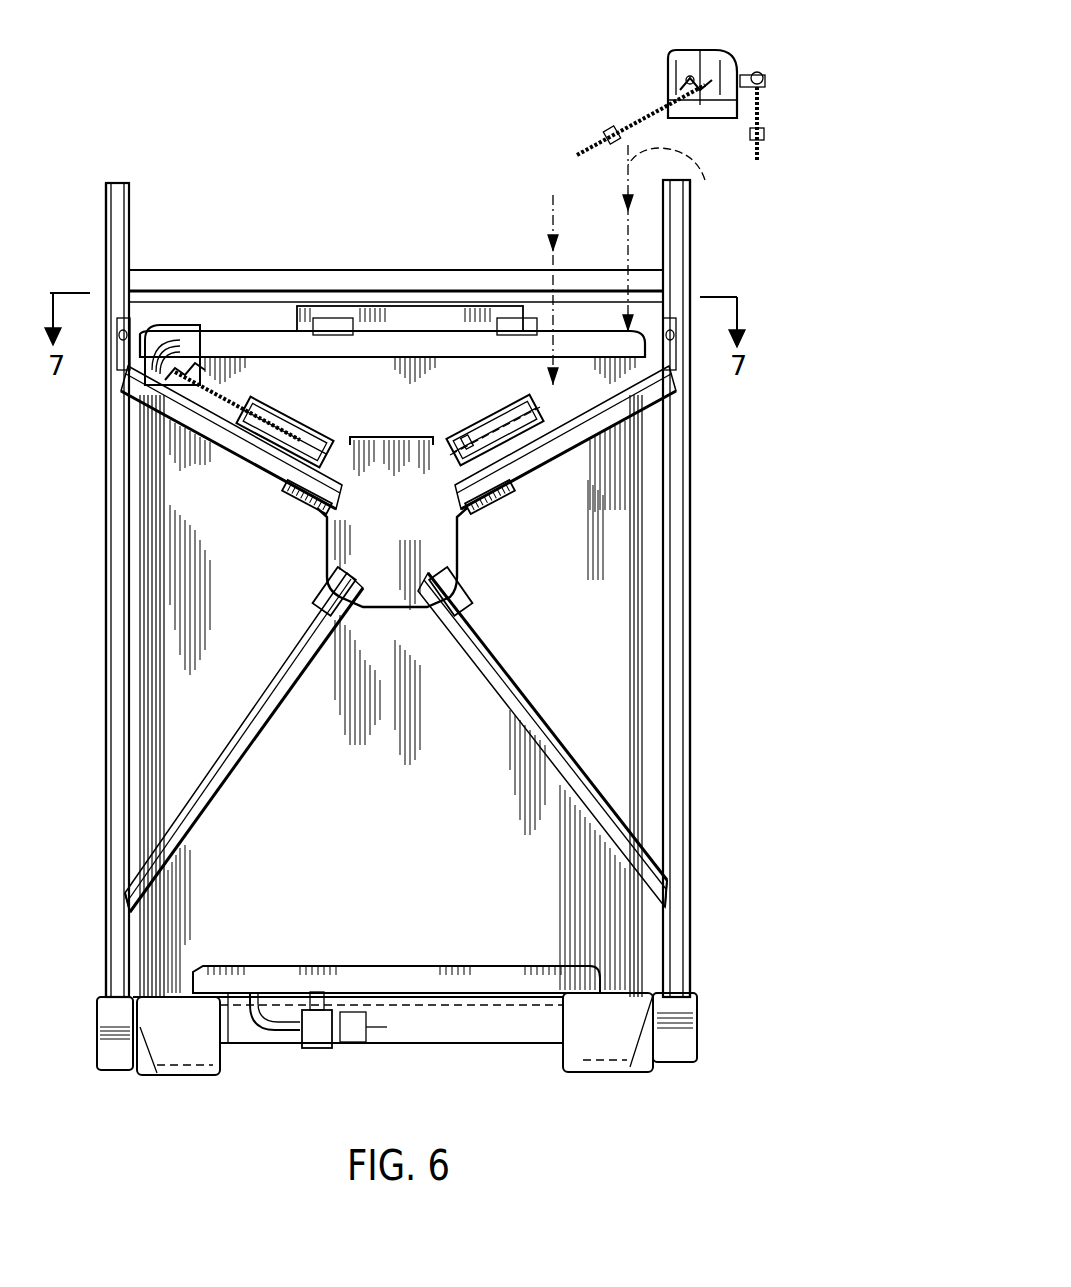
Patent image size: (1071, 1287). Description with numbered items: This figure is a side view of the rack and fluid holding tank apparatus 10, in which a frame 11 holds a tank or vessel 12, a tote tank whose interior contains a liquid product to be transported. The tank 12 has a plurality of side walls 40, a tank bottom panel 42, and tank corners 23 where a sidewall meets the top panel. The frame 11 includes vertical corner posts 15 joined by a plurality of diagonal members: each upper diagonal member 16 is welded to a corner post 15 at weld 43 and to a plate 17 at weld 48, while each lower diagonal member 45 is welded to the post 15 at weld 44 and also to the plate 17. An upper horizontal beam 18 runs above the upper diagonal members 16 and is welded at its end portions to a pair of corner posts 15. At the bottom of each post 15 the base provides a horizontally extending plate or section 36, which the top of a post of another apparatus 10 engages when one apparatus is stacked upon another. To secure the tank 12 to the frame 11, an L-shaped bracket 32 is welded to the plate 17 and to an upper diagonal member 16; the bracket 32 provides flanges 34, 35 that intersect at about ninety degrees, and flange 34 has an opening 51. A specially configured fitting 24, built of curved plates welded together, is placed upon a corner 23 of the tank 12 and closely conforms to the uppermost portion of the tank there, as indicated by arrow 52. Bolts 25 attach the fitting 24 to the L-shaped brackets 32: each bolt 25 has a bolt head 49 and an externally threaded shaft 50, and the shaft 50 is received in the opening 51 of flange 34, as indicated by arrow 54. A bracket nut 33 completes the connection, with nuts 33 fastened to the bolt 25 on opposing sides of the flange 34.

The rack and fluid holding tank apparatus 10 is at (447, 100).
The frame 11 is at (690, 673).
The tank or vessel 12 is at (393, 867).
The corner post 15 is at (680, 512).
The upper diagonal member 16 is at (280, 470).
The plate 17 is at (353, 550).
The upper horizontal beam 18 is at (403, 270).
The tank corner 23 is at (628, 325).
The fitting 24 is at (190, 337).
The bolt 25 is at (660, 110).
The L-shaped bracket 32 is at (325, 440).
The bracket nut 33 is at (765, 130).
The flange 34 is at (547, 400).
The flange 35 is at (437, 437).
The horizontally extending plate or section 36 is at (100, 1005).
The side wall 40 is at (617, 597).
The tank bottom panel 42 is at (400, 966).
The weld 43 is at (122, 370).
The weld 44 is at (125, 895).
The lower diagonal member 45 is at (210, 787).
The weld 48 is at (298, 498).
The bolt head 49 is at (692, 78).
The externally threaded shaft 50 is at (600, 140).
The opening 51 is at (250, 440).
The arrow 52 is at (700, 172).
The arrow 54 is at (548, 185).